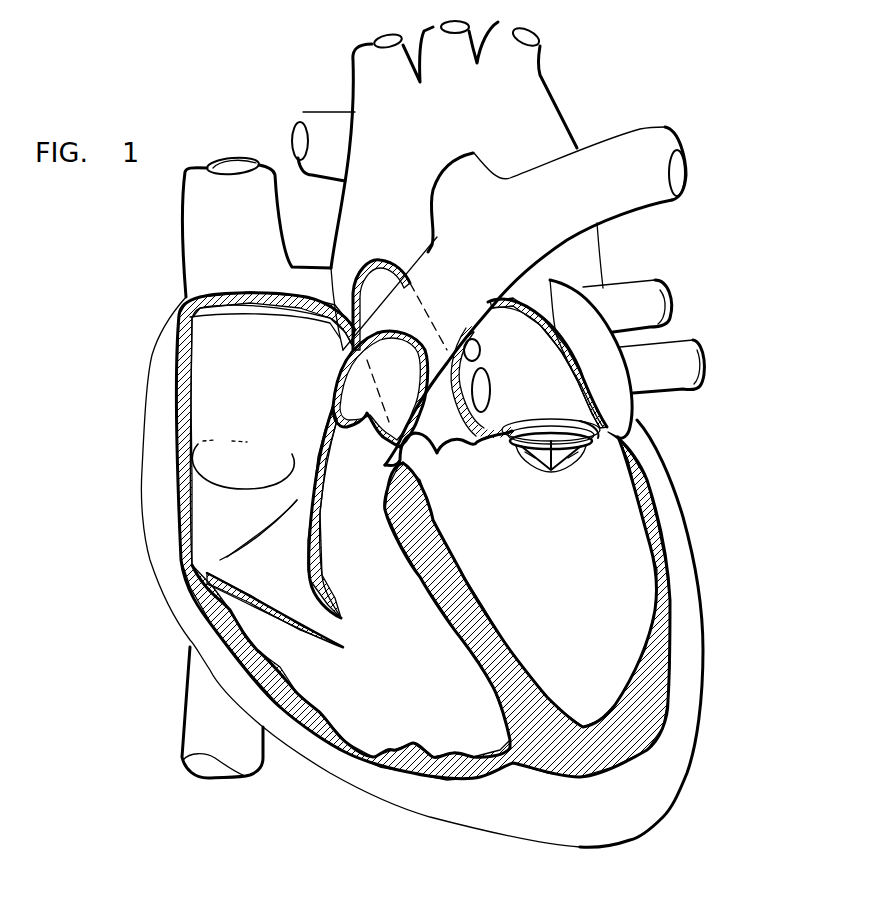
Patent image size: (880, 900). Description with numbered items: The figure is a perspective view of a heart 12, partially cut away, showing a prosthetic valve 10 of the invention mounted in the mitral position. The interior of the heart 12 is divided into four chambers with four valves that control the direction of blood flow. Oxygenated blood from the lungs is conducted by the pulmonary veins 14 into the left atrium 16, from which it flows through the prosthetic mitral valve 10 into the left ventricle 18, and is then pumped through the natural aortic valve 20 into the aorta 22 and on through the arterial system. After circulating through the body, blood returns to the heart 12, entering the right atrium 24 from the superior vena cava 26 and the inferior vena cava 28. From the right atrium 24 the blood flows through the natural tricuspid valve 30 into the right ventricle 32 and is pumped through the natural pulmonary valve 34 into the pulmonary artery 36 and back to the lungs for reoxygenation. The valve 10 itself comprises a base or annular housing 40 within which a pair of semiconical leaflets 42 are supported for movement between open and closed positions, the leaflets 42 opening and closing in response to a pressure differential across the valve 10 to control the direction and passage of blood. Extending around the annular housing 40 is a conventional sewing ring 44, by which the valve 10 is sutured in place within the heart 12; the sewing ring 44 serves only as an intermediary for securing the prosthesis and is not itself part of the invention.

The valve 10 is at (552, 456).
The heart 12 is at (690, 511).
The pulmonary veins 14 is at (648, 297).
The left atrium 16 is at (541, 365).
The left ventricle 18 is at (578, 620).
The natural aortic valve 20 is at (443, 450).
The aorta 22 is at (398, 226).
The right atrium 24 is at (263, 393).
The superior vena cava 26 is at (248, 226).
The inferior vena cava 28 is at (205, 713).
The natural tricuspid valve 30 is at (293, 576).
The right ventricle 32 is at (407, 676).
The natural pulmonary valve 34 is at (365, 424).
The pulmonary artery 36 is at (508, 253).
The annular housing 40 is at (548, 424).
The semiconical leaflets 42 is at (541, 462).
The sewing ring 44 is at (585, 418).